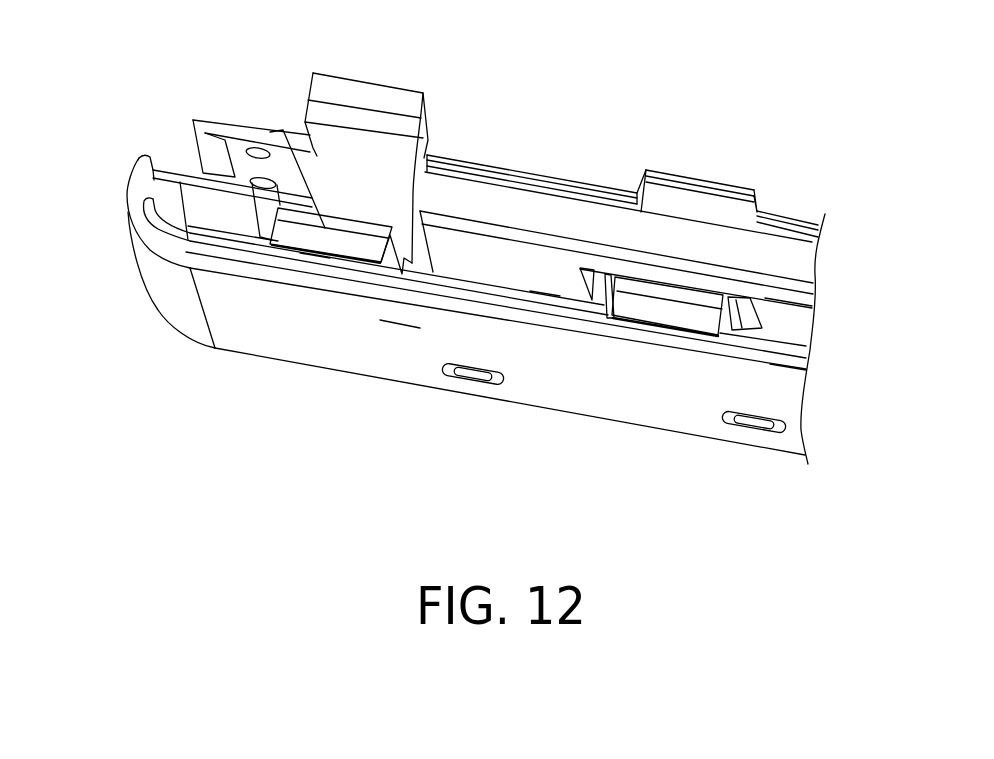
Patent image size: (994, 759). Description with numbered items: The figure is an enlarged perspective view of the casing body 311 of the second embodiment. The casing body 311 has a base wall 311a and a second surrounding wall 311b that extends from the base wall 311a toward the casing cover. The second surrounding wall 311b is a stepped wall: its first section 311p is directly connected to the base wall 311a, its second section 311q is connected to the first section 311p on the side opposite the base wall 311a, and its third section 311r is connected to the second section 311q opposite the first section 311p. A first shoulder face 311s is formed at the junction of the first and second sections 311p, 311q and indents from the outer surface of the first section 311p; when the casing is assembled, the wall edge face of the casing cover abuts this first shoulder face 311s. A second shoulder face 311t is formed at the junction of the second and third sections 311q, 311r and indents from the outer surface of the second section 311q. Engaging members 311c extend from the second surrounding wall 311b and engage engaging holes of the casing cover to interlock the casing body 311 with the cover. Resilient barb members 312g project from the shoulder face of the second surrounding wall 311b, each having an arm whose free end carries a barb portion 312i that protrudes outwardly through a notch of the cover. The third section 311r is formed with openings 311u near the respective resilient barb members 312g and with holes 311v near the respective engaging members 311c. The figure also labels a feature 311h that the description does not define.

The casing body 311 is at (141, 286).
The base wall 311a is at (662, 430).
The second surrounding wall 311b is at (398, 340).
The first section 311p is at (390, 407).
The engaging member 311c is at (669, 306).
The rib 311h is at (327, 260).
The second section 311q is at (545, 305).
The third section 311r is at (789, 313).
The first shoulder face 311s is at (783, 360).
The second shoulder face 311t is at (432, 155).
The opening 311u is at (402, 226).
The hole 311v is at (748, 314).
The resilient barb member 312g is at (321, 231).
The barb portion 312i is at (277, 141).